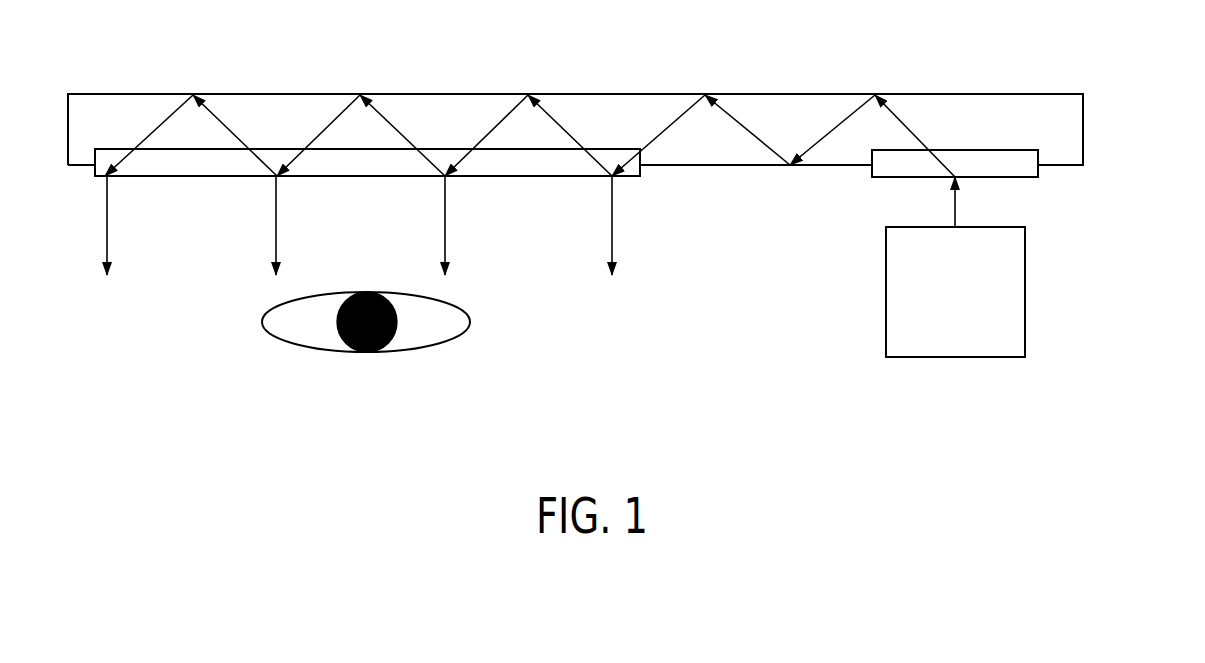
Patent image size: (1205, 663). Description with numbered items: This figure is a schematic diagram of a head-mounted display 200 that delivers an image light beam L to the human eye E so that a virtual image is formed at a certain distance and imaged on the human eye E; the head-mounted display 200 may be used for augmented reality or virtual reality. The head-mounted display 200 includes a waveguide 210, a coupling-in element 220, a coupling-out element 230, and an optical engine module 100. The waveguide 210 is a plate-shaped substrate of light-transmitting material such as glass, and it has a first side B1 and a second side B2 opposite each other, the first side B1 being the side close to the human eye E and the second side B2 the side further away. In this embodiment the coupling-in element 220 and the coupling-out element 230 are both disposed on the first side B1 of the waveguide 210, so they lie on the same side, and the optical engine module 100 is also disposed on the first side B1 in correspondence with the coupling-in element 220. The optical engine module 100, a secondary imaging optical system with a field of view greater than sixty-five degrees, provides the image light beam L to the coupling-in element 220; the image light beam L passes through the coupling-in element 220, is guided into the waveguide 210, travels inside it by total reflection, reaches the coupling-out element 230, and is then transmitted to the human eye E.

The optical engine module 100 is at (1012, 296).
The head-mounted display 200 is at (1082, 442).
The waveguide 210 is at (1068, 130).
The coupling-in element 220 is at (892, 172).
The coupling-out element 230 is at (178, 168).
The first side B1 is at (1056, 168).
The second side B2 is at (1056, 91).
The image light beam L is at (275, 226).
The human eye E is at (424, 350).